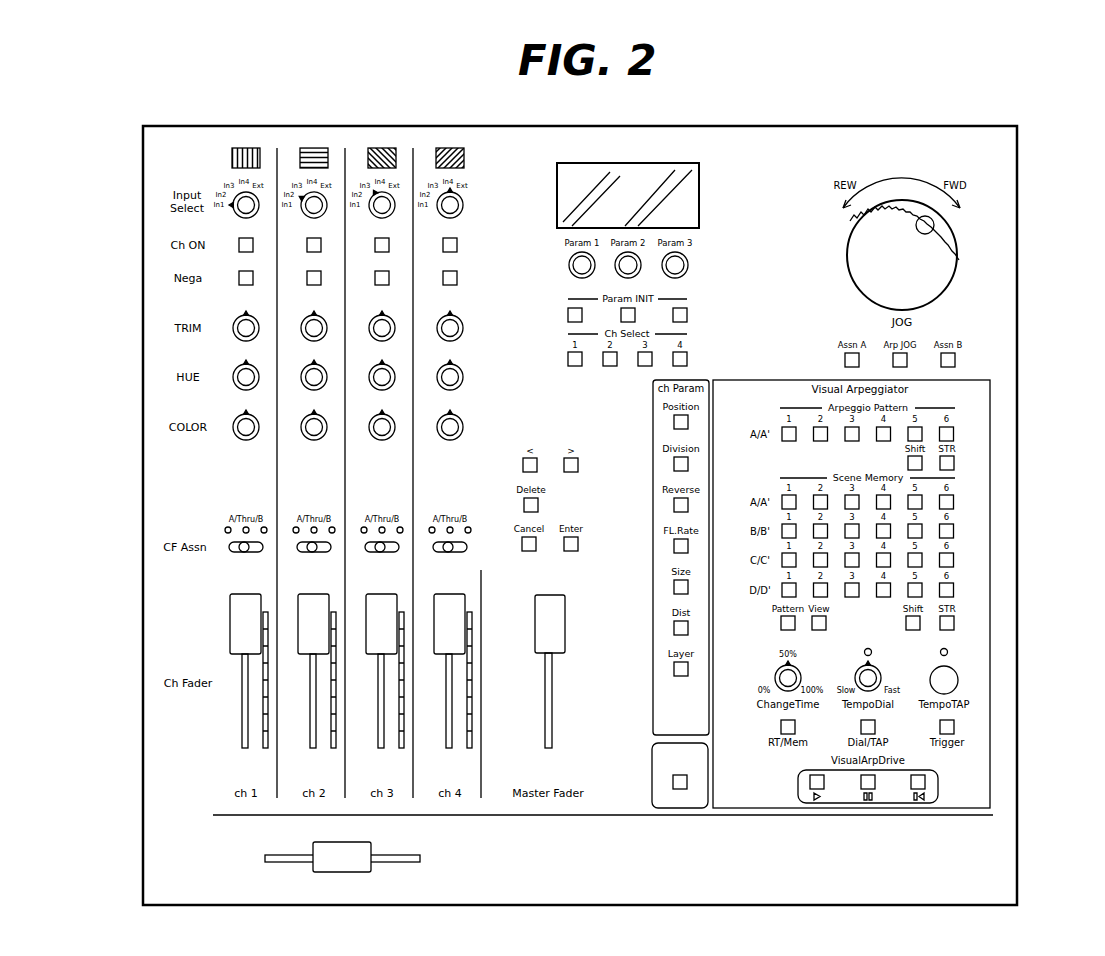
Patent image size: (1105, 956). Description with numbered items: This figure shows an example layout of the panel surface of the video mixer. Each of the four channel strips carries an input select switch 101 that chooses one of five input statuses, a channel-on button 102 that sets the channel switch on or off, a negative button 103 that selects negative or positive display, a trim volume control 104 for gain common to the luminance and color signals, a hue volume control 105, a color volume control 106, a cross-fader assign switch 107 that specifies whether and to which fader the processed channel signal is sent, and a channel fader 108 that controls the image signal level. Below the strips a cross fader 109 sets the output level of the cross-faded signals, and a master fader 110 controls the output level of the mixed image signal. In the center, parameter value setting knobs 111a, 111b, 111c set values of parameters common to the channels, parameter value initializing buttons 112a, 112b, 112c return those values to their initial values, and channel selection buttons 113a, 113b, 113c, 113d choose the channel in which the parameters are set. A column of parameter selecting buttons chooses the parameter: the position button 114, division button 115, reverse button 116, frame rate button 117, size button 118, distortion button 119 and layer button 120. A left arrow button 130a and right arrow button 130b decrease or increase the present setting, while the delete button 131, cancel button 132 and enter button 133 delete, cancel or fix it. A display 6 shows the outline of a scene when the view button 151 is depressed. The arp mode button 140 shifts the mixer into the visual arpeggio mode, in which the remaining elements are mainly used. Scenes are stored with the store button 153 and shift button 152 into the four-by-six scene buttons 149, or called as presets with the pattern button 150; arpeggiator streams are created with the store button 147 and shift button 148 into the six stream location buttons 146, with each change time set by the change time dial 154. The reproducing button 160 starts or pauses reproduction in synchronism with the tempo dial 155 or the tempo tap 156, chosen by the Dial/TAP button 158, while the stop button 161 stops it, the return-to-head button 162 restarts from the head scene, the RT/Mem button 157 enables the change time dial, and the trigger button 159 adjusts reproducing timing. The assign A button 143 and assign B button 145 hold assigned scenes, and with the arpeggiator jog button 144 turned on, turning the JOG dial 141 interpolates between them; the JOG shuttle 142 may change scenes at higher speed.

The display 6 is at (693, 189).
The input select switch 101 is at (243, 213).
The channel-on button 102 is at (241, 251).
The negative button 103 is at (241, 284).
The trim volume control 104 is at (240, 336).
The hue volume control 105 is at (240, 385).
The color volume control 106 is at (240, 435).
The cross-fader assign switch 107 is at (245, 552).
The channel fader 108 is at (237, 628).
The cross fader 109 is at (340, 847).
The master fader 110 is at (540, 640).
The parameter value setting knob 111a is at (569, 266).
The parameter value setting knob 111b is at (619, 270).
The parameter value setting knob 111c is at (688, 265).
The parameter value initializing button 112a is at (568, 315).
The parameter value initializing button 112b is at (621, 318).
The parameter value initializing button 112c is at (687, 315).
The channel selection button 113a is at (568, 359).
The channel selection button 113b is at (605, 366).
The channel selection button 113c is at (645, 366).
The channel selection button 113d is at (687, 359).
The position parameter selecting button 114 is at (674, 422).
The division parameter selecting button 115 is at (674, 464).
The reverse parameter selecting button 116 is at (674, 505).
The frame rate parameter selecting button 117 is at (674, 546).
The size parameter selecting button 118 is at (674, 587).
The distortion parameter selecting button 119 is at (674, 628).
The layer parameter selecting button 120 is at (674, 669).
The left arrow button 130a is at (523, 466).
The right arrow button 130b is at (564, 460).
The delete button 131 is at (524, 504).
The cancel button 132 is at (529, 552).
The enter button 133 is at (571, 552).
The visual arpeggio mode selecting button 140 is at (673, 782).
The JOG dial 141 is at (848, 250).
The JOG shuttle 142 is at (905, 190).
The assign A button 143 is at (845, 360).
The arpeggiator jog button 144 is at (893, 360).
The assign B button 145 is at (955, 360).
The stream location buttons 146 is at (965, 417).
The store button 147 is at (955, 463).
The shift button 148 is at (923, 467).
The scene buttons 149 is at (967, 493).
The pattern button 150 is at (781, 624).
The view button 151 is at (818, 631).
The shift button 152 is at (906, 624).
The store button 153 is at (955, 623).
The change time dial 154 is at (777, 672).
The tempo dial 155 is at (880, 668).
The tempo tap 156 is at (958, 680).
The RT/Mem button 157 is at (781, 728).
The Dial/TAP button 158 is at (875, 727).
The trigger button 159 is at (955, 727).
The reproducing button 160 is at (810, 782).
The stop button 161 is at (862, 792).
The return-to-head button 162 is at (905, 792).